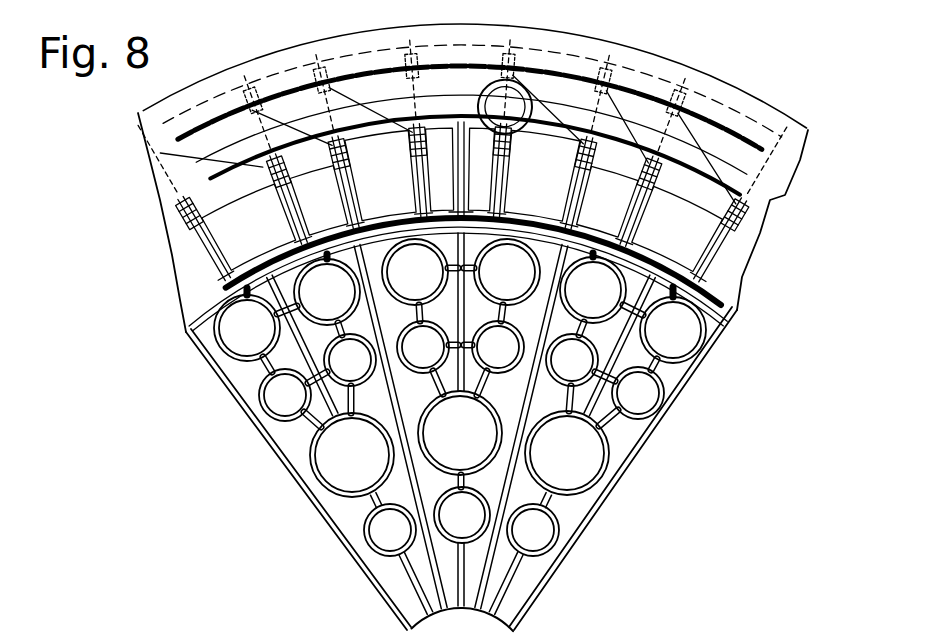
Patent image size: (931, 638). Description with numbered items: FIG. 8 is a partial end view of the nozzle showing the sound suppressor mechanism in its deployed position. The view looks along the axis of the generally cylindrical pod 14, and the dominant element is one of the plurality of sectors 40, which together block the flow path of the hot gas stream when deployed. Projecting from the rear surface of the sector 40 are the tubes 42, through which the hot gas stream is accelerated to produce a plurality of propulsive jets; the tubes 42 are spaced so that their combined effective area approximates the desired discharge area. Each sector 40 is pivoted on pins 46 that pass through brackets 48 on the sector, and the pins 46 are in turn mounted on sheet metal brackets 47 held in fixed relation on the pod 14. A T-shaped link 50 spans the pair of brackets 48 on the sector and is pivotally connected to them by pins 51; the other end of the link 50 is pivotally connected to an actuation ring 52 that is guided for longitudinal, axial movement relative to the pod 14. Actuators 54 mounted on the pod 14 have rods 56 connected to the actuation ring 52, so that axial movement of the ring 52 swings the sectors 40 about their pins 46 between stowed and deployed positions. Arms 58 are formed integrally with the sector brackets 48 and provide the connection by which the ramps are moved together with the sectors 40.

The pod 14 is at (760, 137).
The sector 40 is at (528, 588).
The tube 42 is at (460, 423).
The pin 46 is at (636, 176).
The sheet metal bracket 47 is at (666, 107).
The bracket 48 is at (627, 232).
The T-shaped link 50 is at (682, 218).
The pin 51 is at (613, 238).
The actuation ring 52 is at (768, 203).
The actuator 54 is at (510, 72).
The rod 56 is at (545, 72).
The arm 58 is at (608, 106).